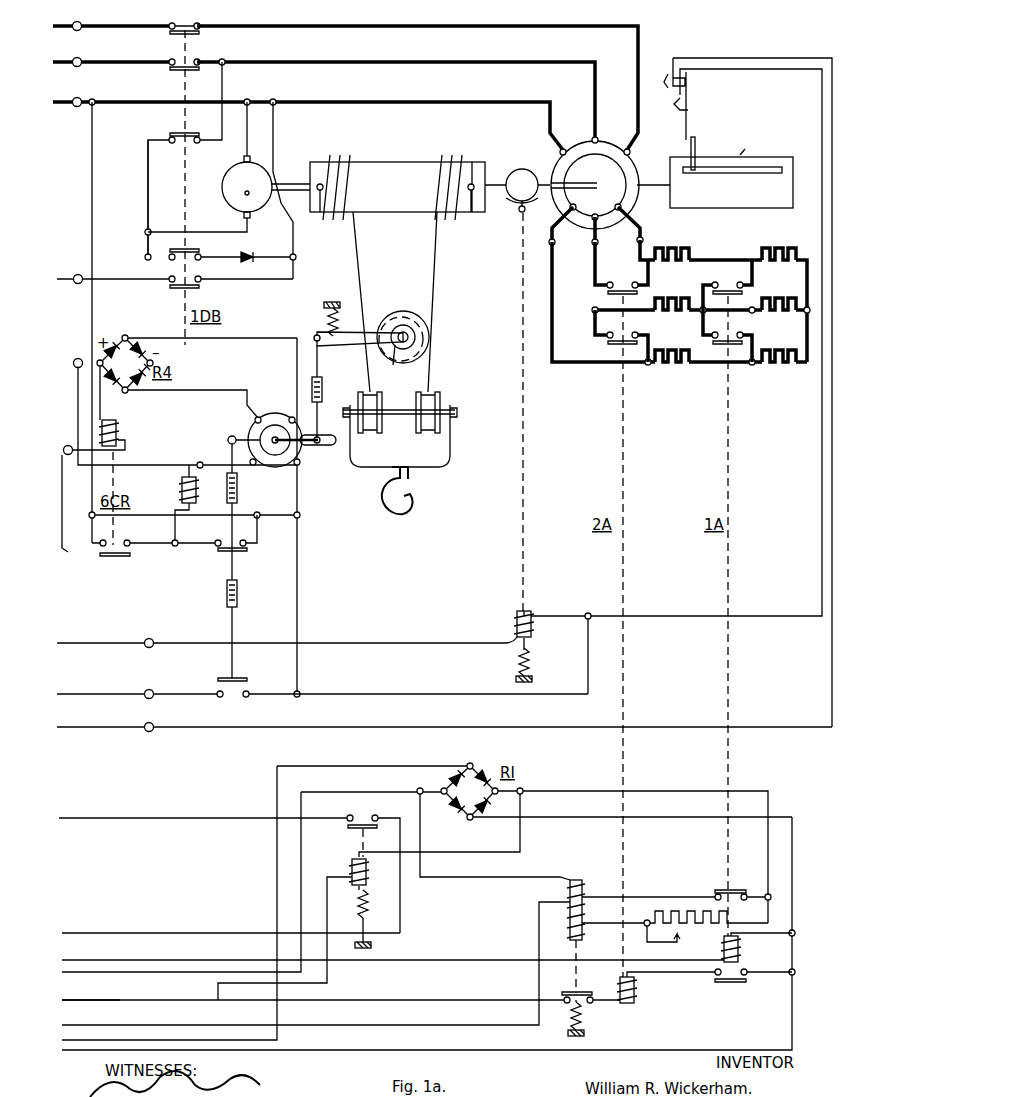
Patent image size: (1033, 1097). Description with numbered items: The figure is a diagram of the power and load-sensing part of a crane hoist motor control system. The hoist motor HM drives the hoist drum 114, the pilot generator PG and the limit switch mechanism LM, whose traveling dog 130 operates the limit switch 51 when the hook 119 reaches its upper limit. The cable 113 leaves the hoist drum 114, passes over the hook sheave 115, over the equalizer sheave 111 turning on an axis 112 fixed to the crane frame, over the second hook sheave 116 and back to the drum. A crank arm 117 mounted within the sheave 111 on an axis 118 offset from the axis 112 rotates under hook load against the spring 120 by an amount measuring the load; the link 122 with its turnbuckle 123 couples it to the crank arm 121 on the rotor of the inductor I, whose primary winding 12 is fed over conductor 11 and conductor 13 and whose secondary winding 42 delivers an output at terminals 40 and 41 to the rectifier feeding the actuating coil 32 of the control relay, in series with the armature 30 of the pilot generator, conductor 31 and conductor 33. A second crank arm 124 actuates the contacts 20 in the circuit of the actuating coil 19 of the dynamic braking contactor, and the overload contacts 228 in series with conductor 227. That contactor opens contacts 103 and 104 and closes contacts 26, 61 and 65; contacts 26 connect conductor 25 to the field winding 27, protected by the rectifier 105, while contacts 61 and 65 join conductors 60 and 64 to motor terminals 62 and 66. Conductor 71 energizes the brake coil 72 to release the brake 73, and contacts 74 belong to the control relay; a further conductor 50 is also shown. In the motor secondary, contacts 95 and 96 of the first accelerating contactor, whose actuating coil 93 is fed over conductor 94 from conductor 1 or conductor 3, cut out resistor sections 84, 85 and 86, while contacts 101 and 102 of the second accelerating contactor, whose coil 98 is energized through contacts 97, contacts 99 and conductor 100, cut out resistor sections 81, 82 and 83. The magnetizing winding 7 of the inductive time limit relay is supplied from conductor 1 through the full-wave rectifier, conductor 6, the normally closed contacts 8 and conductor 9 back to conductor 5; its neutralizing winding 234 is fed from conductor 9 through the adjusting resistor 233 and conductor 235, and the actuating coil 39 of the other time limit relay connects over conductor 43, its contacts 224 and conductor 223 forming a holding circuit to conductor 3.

The conductor 1 is at (94, 1055).
The conductor 3 is at (75, 931).
The conductor 5 is at (362, 764).
The conductor 6 is at (304, 897).
The magnetizing winding 7 is at (585, 882).
The normally closed contacts 8 is at (718, 882).
The conductor 9 is at (660, 788).
The conductor 11 is at (60, 360).
The primary winding 12 is at (258, 470).
The conductor 13 is at (62, 112).
The actuating coil 19 is at (178, 484).
The contacts 20 is at (218, 550).
The conductor 25 is at (64, 288).
The contacts 26 is at (200, 283).
The field winding 27 is at (285, 172).
The armature 30 is at (224, 200).
The conductor 31 is at (147, 202).
The actuating coil 32 is at (120, 420).
The conductor 33 is at (69, 515).
The actuating coil 39 is at (346, 860).
The output terminal 40 is at (212, 340).
The output terminal 41 is at (205, 388).
The secondary winding 42 is at (284, 407).
The conductor 43 is at (218, 1001).
The conductor 50 is at (66, 725).
The limit switch 51 is at (690, 82).
The conductor 60 is at (62, 73).
The contacts 61 is at (190, 60).
The motor terminal 62 is at (430, 60).
The conductor 64 is at (62, 37).
The contacts 65 is at (196, 16).
The motor terminal 66 is at (530, 24).
The conductor 71 is at (68, 641).
The brake coil 72 is at (536, 626).
The brake 73 is at (523, 520).
The contacts 74 is at (118, 540).
The resistor section 81 is at (672, 245).
The resistor section 82 is at (686, 287).
The resistor section 83 is at (665, 350).
The resistor section 84 is at (778, 245).
The resistor section 85 is at (788, 287).
The resistor section 86 is at (784, 342).
The actuating coil 93 is at (742, 946).
The conductor 94 is at (98, 962).
The contacts 95 is at (733, 281).
The contacts 96 is at (737, 325).
The contacts 97 is at (748, 983).
The coil 98 is at (638, 992).
The contacts 99 is at (582, 1006).
The conductor 100 is at (156, 1001).
The contacts 101 is at (630, 281).
The contacts 102 is at (632, 325).
The contacts 103 is at (195, 142).
The contacts 104 is at (196, 260).
The rectifier 105 is at (252, 250).
The equalizer sheave 111 is at (398, 308).
The axis 112 is at (402, 364).
The cable 113 is at (357, 235).
The hoist drum 114 is at (388, 160).
The hook sheave 115 is at (380, 424).
The second hook sheave 116 is at (440, 392).
The crank arm 117 is at (333, 345).
The axis 118 is at (415, 333).
The hook 119 is at (404, 506).
The spring 120 is at (322, 318).
The crank arm 121 is at (310, 448).
The link 122 is at (320, 368).
The turnbuckle 123 is at (322, 392).
The second crank arm 124 is at (236, 430).
The traveling dog 130 is at (697, 140).
The conductor 223 is at (75, 816).
The contacts 224 is at (362, 815).
The conductor 227 is at (66, 692).
The contacts 228 is at (235, 698).
The adjusting resistor 233 is at (672, 906).
The neutralizing winding 234 is at (596, 898).
The conductor 235 is at (76, 1015).